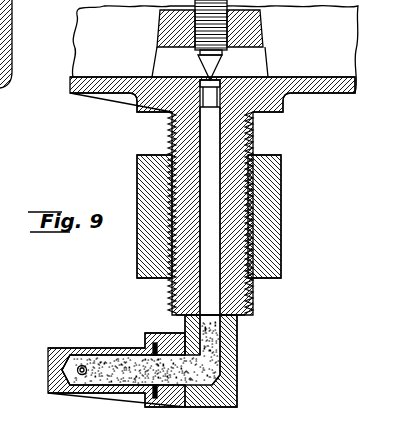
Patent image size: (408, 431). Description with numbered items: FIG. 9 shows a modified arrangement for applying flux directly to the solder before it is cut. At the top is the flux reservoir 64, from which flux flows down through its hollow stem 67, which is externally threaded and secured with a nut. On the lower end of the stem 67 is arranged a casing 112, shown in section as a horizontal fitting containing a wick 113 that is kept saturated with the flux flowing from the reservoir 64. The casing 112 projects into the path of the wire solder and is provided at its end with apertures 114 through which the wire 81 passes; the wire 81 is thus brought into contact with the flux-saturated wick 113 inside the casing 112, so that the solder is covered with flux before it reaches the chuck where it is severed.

The flux reservoir 64 is at (215, 49).
The hollow stem 67 is at (235, 130).
The wire 81 is at (80, 375).
The casing 112 is at (110, 350).
The wick 113 is at (127, 372).
The apertures 114 is at (83, 365).